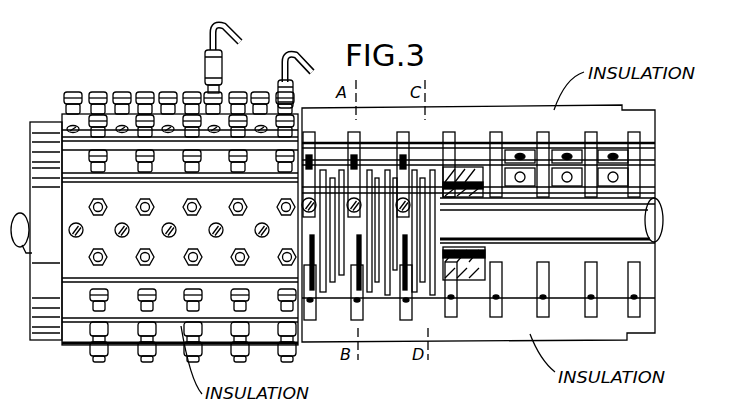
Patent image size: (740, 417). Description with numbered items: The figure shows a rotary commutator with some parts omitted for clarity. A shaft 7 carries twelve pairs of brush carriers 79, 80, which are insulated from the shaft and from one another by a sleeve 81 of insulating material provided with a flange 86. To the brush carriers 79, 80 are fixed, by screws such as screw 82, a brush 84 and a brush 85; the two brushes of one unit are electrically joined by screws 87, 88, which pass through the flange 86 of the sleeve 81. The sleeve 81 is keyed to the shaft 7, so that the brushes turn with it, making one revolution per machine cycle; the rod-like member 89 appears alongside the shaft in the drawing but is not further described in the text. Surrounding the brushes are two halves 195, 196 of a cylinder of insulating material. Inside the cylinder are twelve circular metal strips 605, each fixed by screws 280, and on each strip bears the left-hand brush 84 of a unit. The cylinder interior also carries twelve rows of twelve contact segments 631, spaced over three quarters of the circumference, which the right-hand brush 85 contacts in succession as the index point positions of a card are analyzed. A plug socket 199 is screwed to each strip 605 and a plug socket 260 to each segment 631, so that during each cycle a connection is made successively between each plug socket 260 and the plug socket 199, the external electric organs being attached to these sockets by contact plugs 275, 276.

The shaft 7 is at (618, 241).
The brush carrier 79 is at (451, 172).
The brush carrier 80 is at (476, 292).
The sleeve 81 is at (476, 192).
The screw 82 is at (357, 193).
The brush 84 is at (402, 287).
The brush 85 is at (434, 190).
The flange 86 is at (464, 275).
The screw 87 is at (484, 272).
The screw 88 is at (493, 165).
The conductor rod 89 is at (531, 199).
The cylinder half 195 is at (170, 308).
The cylinder half 196 is at (518, 336).
The plug socket 199 is at (206, 94).
The plug socket 260 is at (272, 230).
The contact plug 275 is at (280, 84).
The contact plug 276 is at (206, 62).
The screw 280 is at (258, 222).
The circular metal strip 605 is at (405, 150).
The contact segment 631 is at (612, 154).